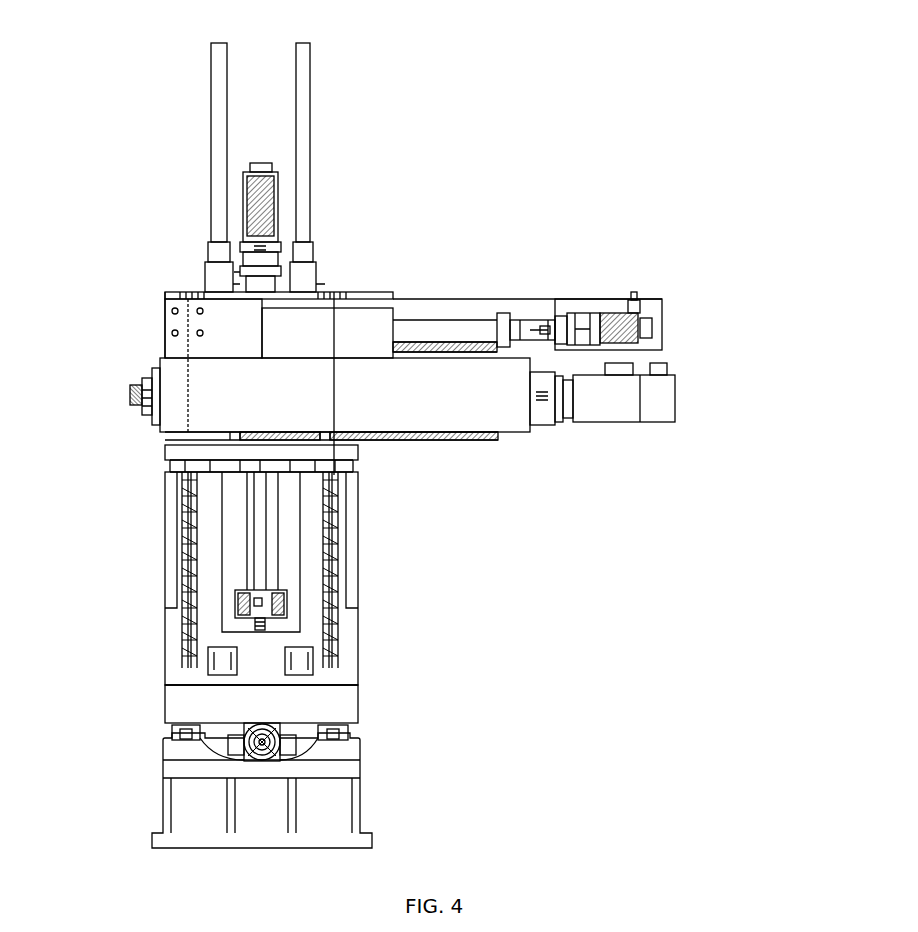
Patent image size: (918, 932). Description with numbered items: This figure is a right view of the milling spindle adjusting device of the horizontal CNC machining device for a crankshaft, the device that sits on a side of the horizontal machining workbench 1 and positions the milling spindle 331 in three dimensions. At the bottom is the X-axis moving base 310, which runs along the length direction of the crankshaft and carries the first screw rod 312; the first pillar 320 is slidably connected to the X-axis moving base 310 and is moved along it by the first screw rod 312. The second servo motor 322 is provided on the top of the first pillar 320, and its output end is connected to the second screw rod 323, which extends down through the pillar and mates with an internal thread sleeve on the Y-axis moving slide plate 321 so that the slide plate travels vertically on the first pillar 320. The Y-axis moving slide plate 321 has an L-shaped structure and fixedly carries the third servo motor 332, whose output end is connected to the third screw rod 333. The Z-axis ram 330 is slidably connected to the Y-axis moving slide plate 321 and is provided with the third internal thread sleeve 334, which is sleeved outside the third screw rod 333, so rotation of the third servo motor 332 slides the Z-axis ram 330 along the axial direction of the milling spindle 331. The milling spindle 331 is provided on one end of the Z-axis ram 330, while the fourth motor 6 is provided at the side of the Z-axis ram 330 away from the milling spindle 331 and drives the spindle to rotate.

The horizontal machining workbench 1 is at (503, 108).
The fourth motor 6 is at (675, 397).
The X-axis moving base 310 is at (177, 815).
The first screw rod 312 is at (280, 742).
The first pillar 320 is at (350, 628).
The Y-axis moving slide plate 321 is at (237, 320).
The second servo motor 322 is at (280, 180).
The second screw rod 323 is at (260, 577).
The Z-axis ram 330 is at (248, 407).
The milling spindle 331 is at (133, 382).
The third servo motor 332 is at (630, 310).
The third screw rod 333 is at (447, 340).
The third internal thread sleeve 334 is at (370, 317).